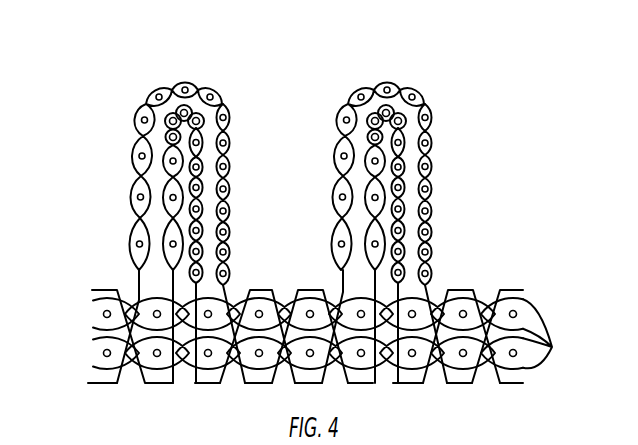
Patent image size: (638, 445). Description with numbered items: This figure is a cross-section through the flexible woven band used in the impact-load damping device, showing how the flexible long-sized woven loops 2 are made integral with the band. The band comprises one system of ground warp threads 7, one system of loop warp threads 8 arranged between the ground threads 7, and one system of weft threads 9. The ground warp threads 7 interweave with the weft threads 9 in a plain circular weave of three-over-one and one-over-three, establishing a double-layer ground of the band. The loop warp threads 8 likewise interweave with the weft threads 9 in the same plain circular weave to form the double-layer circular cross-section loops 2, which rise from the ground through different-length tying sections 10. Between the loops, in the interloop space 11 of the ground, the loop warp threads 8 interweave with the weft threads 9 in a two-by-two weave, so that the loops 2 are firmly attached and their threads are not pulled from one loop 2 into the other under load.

The flexible long-sized woven loops 2 is at (150, 134).
The ground warp threads 7 is at (523, 333).
The loop warp threads 8 is at (505, 290).
The weft threads 9 is at (102, 314).
The tying sections 10 is at (138, 268).
The interloop space 11 is at (330, 284).